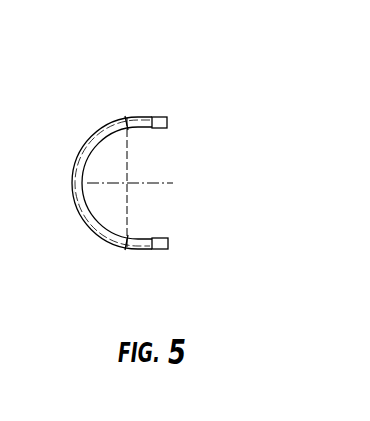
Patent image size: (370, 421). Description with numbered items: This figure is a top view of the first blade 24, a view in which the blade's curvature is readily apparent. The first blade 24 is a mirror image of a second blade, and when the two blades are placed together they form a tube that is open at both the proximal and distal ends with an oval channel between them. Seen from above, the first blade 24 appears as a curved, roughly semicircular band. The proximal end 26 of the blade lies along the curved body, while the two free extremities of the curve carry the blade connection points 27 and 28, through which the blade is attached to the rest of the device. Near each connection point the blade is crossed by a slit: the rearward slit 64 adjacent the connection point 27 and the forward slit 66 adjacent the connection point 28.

The first blade 24 is at (80, 116).
The proximal end 26 is at (73, 188).
The blade connection point 27 is at (160, 128).
The blade connection point 28 is at (160, 249).
The rearward slit 64 is at (125, 118).
The forward slit 66 is at (125, 250).